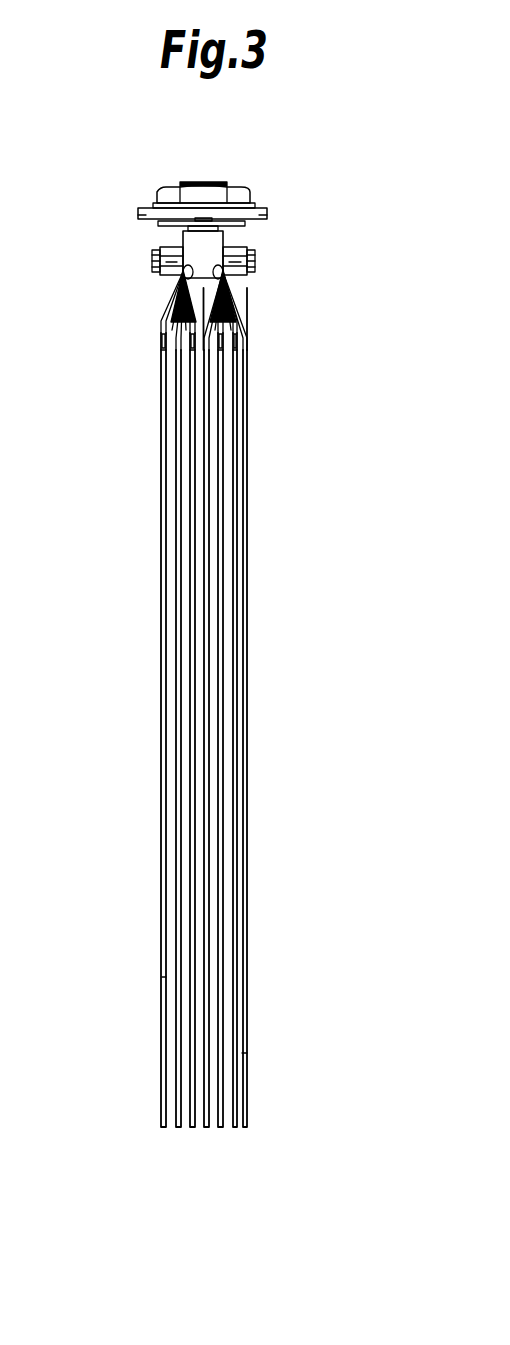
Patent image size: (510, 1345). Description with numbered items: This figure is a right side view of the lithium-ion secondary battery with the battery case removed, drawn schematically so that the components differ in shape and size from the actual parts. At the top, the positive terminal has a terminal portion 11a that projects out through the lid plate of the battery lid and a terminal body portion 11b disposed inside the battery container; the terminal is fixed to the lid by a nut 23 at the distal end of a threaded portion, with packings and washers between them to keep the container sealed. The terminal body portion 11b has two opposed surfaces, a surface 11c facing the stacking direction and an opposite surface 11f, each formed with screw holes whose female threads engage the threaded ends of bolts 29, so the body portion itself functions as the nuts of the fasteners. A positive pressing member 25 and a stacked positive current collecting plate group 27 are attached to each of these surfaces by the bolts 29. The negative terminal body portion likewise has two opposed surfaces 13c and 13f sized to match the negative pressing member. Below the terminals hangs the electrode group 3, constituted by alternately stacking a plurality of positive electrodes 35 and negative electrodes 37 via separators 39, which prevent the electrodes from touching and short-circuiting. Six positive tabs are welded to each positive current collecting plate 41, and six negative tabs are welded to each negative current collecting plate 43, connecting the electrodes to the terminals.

The electrode group 3 is at (250, 680).
The terminal portion 11a is at (204, 181).
The terminal body portion 11b is at (241, 241).
The surface 11c is at (178, 290).
The surface 13c is at (123, 319).
The surface 11f is at (232, 306).
The surface 13f is at (225, 311).
The nut 23 is at (241, 195).
The positive pressing member 25 is at (173, 267).
The stacked positive current collecting plate group 27 is at (150, 260).
The bolt 29 is at (158, 252).
The positive electrode 35 is at (242, 1053).
The negative electrode 37 is at (162, 977).
The separator 39 is at (247, 302).
The positive current collecting plate 41 is at (163, 331).
The negative current collecting plate 43 is at (240, 314).